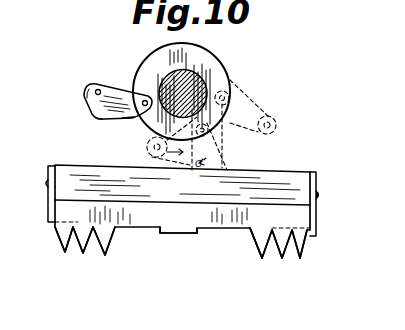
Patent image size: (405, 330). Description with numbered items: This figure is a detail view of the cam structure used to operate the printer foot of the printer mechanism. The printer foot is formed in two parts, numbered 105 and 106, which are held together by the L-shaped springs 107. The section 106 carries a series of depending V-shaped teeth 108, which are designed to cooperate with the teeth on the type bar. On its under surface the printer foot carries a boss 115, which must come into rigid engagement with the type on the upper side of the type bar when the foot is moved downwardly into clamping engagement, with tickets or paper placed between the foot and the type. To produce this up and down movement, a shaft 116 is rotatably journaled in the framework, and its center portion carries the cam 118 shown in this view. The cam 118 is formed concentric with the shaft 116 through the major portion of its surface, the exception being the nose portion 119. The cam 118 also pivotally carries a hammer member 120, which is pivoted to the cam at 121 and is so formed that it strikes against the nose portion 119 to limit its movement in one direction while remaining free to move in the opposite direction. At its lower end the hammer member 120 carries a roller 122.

The printer foot part 105 is at (280, 197).
The printer foot section 106 is at (250, 220).
The L-shaped springs 107 is at (50, 200).
The V-shaped teeth 108 is at (85, 235).
The boss 115 is at (177, 229).
The shaft 116 is at (192, 88).
The cam 118 is at (205, 62).
The nose portion 119 is at (137, 122).
The hammer member 120 is at (103, 110).
The pivot 121 is at (142, 93).
The roller 122 is at (95, 90).